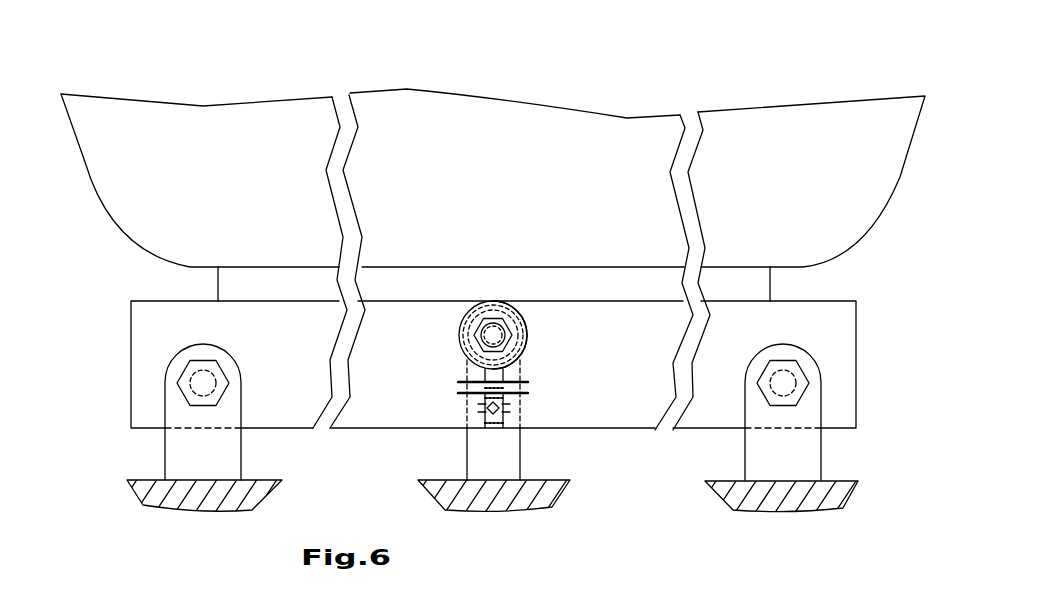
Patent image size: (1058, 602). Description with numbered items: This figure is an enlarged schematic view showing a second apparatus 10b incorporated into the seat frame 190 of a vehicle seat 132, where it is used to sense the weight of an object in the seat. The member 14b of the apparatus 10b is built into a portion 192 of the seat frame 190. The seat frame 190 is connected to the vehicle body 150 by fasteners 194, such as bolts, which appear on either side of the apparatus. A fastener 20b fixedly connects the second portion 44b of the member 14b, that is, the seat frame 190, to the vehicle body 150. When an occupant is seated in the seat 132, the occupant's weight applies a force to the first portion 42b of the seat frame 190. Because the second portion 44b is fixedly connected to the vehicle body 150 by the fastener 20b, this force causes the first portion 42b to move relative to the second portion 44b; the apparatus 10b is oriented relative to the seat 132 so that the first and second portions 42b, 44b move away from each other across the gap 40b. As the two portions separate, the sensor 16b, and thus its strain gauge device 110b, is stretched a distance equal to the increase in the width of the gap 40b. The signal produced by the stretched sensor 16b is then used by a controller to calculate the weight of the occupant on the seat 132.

The vehicle seat 132 is at (762, 143).
The seat frame 190 is at (642, 400).
The fasteners 194 is at (222, 382).
The vehicle body 150 is at (203, 500).
The apparatus 10b is at (428, 433).
The second portion 44b is at (470, 338).
The fastener 20b is at (503, 318).
The portion of the seat frame 192 is at (530, 345).
The member 14b is at (525, 365).
The gap 40b is at (458, 392).
The sensor 16b is at (483, 415).
The strain gauge device 110b is at (507, 402).
The first portion 42b is at (527, 415).